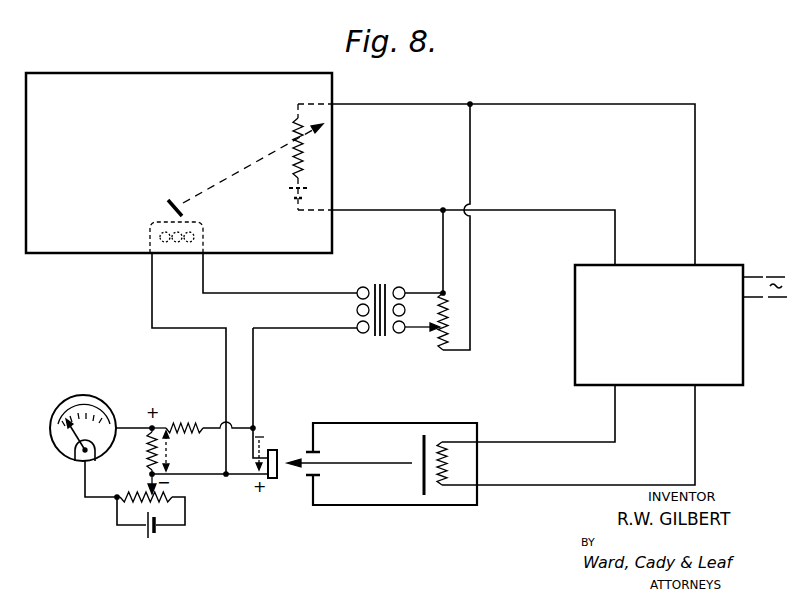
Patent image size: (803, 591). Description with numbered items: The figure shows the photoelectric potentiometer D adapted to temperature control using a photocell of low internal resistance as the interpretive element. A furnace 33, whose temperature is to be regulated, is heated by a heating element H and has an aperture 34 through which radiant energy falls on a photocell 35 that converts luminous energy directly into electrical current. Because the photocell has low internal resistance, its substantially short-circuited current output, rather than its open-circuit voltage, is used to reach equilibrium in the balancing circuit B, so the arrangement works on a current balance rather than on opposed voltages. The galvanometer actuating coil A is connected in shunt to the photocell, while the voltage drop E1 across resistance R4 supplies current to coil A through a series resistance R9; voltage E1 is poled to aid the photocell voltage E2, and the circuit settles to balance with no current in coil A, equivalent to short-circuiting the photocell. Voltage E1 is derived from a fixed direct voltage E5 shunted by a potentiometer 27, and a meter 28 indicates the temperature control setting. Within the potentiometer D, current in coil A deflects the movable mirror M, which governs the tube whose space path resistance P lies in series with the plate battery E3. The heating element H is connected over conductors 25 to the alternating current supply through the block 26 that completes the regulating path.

The photoelectric potentiometer D is at (206, 74).
The space path resistance P is at (292, 131).
The movable element or mirror M is at (165, 203).
The plate battery E3 is at (295, 189).
The actuating coil A is at (170, 246).
The power supply unit 26 is at (575, 320).
The conductors 25 is at (759, 298).
The meter 28 is at (54, 447).
The resistor R9 is at (202, 415).
The resistance R4 is at (137, 461).
The fixed voltage E1 is at (182, 451).
The photocell voltage E2 is at (255, 462).
The balancing circuit B is at (208, 470).
The photocell 35 is at (272, 482).
The potentiometer 27 is at (173, 505).
The fixed voltage E5 is at (149, 541).
The aperture 34 is at (320, 453).
The furnace 33 is at (396, 498).
The heating element H is at (456, 452).